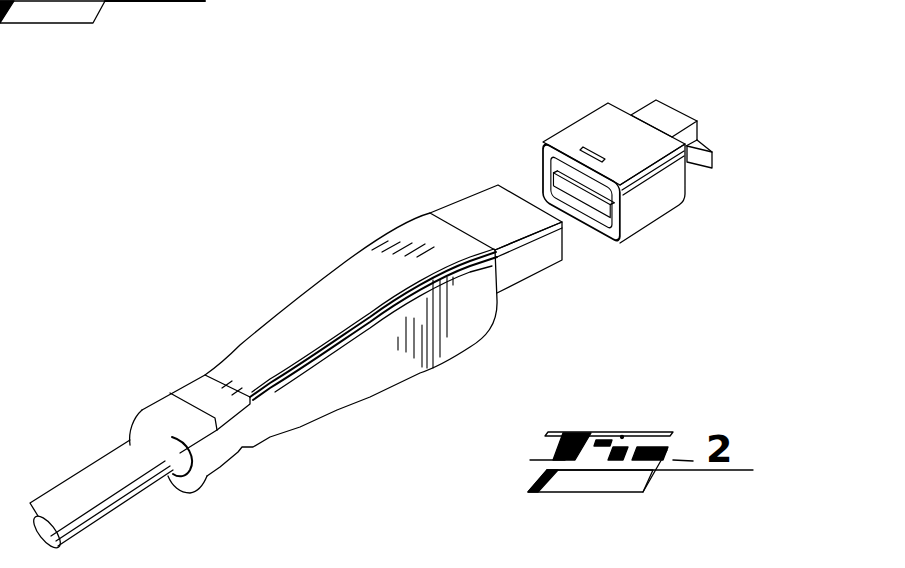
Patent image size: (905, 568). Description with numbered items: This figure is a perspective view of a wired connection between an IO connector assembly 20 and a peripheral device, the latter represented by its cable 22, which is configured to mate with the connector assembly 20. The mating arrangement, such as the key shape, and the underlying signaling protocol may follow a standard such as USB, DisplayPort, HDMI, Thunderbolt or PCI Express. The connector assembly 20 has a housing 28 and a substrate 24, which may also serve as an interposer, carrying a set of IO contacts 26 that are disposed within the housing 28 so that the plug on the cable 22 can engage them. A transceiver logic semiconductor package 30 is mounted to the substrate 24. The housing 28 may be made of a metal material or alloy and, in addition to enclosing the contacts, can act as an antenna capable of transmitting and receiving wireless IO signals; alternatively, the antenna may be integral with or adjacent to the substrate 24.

The connector assembly 20 is at (614, 173).
The cable 22 is at (323, 300).
The substrate 24 is at (699, 168).
The IO contacts 26 is at (586, 220).
The housing 28 is at (580, 128).
The transceiver logic semiconductor package 30 is at (647, 110).